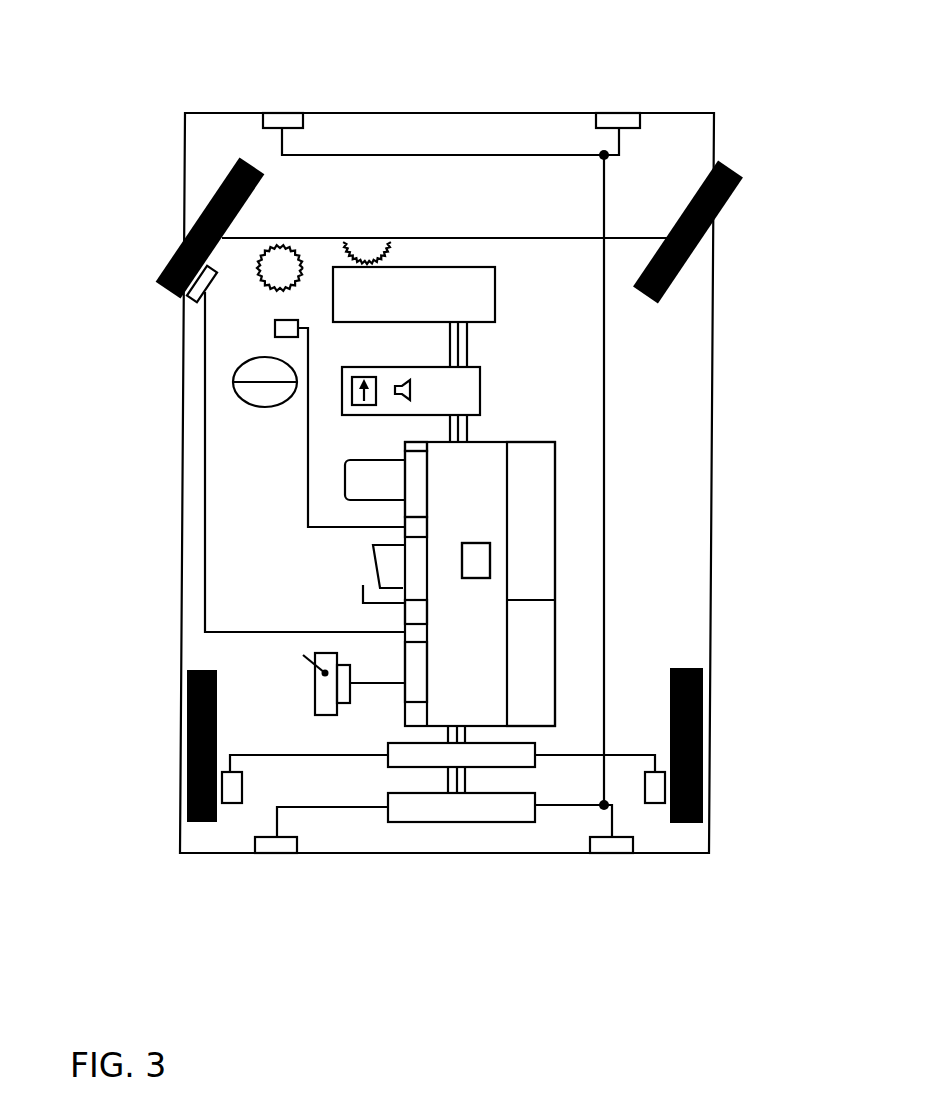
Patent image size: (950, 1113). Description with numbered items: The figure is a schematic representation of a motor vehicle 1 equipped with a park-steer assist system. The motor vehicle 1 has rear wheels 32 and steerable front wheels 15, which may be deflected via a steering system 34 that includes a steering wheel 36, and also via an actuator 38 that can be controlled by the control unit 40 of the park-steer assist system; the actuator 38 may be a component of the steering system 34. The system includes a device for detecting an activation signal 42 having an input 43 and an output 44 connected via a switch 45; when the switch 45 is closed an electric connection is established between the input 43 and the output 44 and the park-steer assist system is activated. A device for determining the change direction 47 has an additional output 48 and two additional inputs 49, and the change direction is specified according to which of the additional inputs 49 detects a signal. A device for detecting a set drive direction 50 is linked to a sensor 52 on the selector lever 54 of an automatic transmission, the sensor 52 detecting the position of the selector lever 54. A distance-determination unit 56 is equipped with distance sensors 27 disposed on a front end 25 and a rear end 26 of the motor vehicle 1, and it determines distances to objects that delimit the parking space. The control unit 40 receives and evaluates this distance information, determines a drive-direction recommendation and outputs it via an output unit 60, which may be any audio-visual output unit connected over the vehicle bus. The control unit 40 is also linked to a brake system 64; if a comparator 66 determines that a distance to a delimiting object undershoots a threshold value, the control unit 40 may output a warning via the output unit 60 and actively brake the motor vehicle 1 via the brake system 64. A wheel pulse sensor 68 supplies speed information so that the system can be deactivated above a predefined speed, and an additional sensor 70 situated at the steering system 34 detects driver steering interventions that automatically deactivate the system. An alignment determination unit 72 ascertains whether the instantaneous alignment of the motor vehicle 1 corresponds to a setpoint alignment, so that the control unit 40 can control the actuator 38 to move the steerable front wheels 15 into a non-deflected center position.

The motor vehicle 1 is at (703, 437).
The steerable front wheels 15 is at (167, 265).
The front end of the motor vehicle 25 is at (488, 113).
The rear end of the motor vehicle 26 is at (455, 853).
The distance sensors 27 is at (278, 120).
The rear wheels 32 is at (187, 724).
The steering system 34 is at (277, 228).
The steering wheel 36 is at (236, 393).
The actuator 38 is at (403, 278).
The control unit 40 is at (495, 495).
The device for detecting an activation signal 42 is at (415, 488).
The input of the device for detecting an activation signal 43 is at (398, 462).
The output of the device for detecting an activation signal 44 is at (405, 500).
The switch 45 is at (378, 452).
The device for determining the change direction 47 is at (415, 612).
The additional output 48 is at (405, 547).
The additional inputs 49 is at (405, 604).
The device for detecting a set drive direction 50 is at (415, 680).
The sensor on the selector lever 52 is at (343, 697).
The selector lever 54 is at (325, 705).
The distance-determination unit 56 is at (513, 815).
The output unit 60 is at (472, 387).
The brake system 64 is at (230, 797).
The comparator 66 is at (482, 560).
The wheel pulse sensor 68 is at (186, 296).
The additional sensor at the steering system 70 is at (295, 323).
The alignment determination unit 72 is at (468, 343).